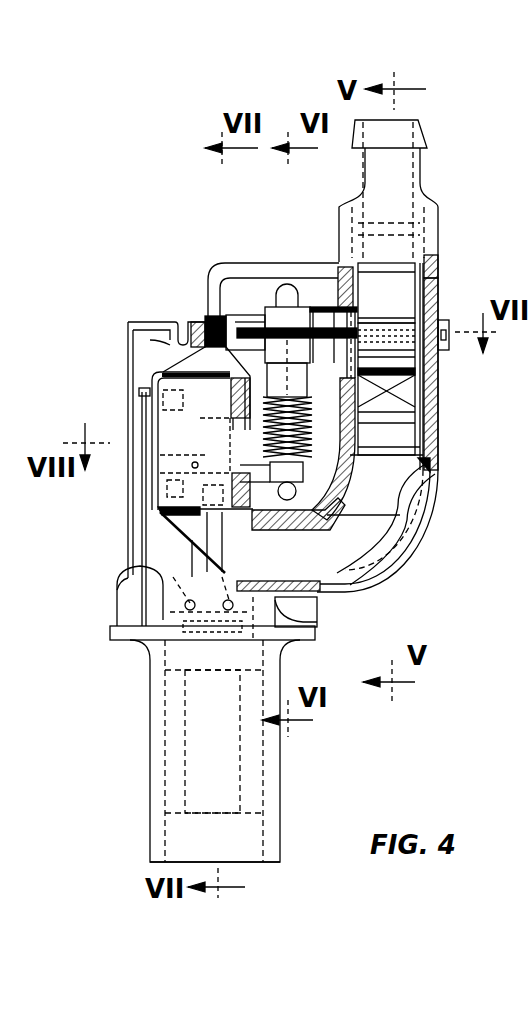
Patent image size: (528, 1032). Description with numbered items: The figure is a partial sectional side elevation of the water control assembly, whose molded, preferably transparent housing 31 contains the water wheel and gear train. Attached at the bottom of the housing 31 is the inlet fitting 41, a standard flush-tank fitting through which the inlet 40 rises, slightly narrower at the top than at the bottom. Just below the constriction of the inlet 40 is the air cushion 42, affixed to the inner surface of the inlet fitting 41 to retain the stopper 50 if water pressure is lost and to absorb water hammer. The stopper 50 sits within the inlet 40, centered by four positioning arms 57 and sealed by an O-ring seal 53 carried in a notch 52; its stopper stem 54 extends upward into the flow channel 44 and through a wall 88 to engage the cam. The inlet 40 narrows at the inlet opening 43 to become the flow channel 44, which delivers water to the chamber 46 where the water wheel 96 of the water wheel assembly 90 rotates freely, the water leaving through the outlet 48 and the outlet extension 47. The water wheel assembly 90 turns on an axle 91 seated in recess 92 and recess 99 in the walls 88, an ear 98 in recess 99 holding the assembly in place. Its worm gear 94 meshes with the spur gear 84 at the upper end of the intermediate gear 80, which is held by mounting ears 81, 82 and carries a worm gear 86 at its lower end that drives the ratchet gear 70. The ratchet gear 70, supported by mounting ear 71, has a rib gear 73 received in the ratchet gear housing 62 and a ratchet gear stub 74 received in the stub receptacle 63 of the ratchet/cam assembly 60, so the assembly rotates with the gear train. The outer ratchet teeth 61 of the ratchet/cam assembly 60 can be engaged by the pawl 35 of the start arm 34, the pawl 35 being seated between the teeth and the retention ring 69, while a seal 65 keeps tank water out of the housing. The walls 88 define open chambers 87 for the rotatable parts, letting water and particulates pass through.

The housing 31 is at (220, 262).
The start arm 34 is at (163, 545).
The pawl 35 is at (150, 495).
The inlet 40 is at (237, 843).
The inlet fitting 41 is at (150, 720).
The air cushion 42 is at (162, 770).
The inlet opening 43 is at (319, 607).
The flow channel 44 is at (412, 550).
The chamber 46 is at (432, 458).
The outlet extension 47 is at (428, 172).
The outlet 48 is at (421, 123).
The stopper 50 is at (150, 654).
The notch 52 is at (173, 592).
The O-ring seal 53 is at (132, 573).
The stopper stem 54 is at (230, 559).
The positioning arms 57 is at (277, 653).
The ratchet/cam assembly 60 is at (198, 320).
The ratchet teeth 61 is at (145, 400).
The ratchet gear housing 62 is at (153, 486).
The stub receptacle 63 is at (138, 405).
The seal 65 is at (150, 340).
The retention ring 69 is at (130, 372).
The ratchet gear 70 is at (282, 500).
The mounting ear 71 is at (353, 476).
The rib gear 73 is at (226, 412).
The ratchet gear stub 74 is at (128, 430).
The intermediate gear 80 is at (357, 405).
The mounting ear 81 is at (278, 288).
The mounting ear 82 is at (328, 517).
The spur gear 84 is at (336, 329).
The worm gear 86 is at (282, 400).
The chambers 87 is at (418, 438).
The walls 88 is at (338, 268).
The water wheel assembly 90 is at (327, 288).
The axle 91 is at (207, 317).
The recess 92 is at (224, 316).
The worm gear 94 is at (312, 305).
The water wheel 96 is at (437, 282).
The ear 98 is at (446, 350).
The recess 99 is at (447, 325).